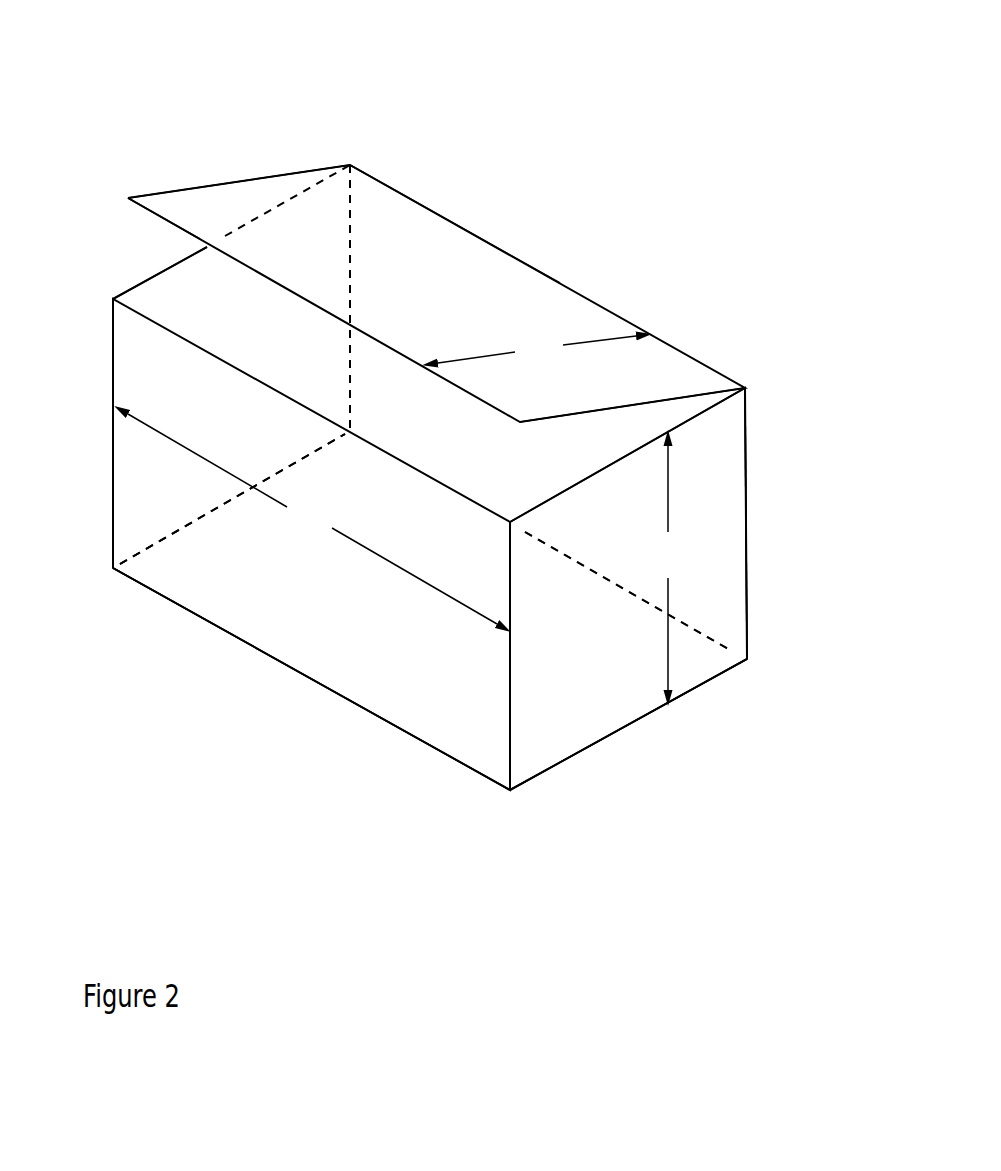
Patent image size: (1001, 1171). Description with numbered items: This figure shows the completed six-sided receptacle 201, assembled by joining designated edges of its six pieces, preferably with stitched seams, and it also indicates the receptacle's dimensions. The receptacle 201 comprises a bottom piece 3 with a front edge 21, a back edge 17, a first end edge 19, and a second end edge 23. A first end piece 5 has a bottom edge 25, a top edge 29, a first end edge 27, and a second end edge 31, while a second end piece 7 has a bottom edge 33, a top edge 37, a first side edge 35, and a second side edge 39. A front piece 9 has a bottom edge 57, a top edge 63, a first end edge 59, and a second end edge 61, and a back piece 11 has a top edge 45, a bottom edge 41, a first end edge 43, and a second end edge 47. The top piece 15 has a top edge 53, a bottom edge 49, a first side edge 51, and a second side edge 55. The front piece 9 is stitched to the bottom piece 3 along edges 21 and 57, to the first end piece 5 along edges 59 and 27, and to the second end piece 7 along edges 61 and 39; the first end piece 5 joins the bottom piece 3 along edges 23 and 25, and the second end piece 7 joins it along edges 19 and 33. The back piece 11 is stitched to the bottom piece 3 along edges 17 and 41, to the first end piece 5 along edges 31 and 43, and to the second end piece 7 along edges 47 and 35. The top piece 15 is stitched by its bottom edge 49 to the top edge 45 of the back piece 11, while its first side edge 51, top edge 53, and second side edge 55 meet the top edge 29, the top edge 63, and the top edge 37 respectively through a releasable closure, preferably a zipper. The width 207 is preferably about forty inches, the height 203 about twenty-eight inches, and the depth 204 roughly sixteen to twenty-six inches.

The receptacle 201 is at (660, 80).
The bottom piece 3 is at (463, 753).
The first end piece 5 is at (154, 384).
The second end piece 7 is at (725, 572).
The front piece 9 is at (210, 555).
The back piece 11 is at (733, 453).
The top piece 15 is at (550, 303).
The back edge of bottom piece 17 is at (580, 562).
The first end edge of bottom piece 19 is at (568, 757).
The front edge of bottom piece 21 is at (255, 647).
The second end edge of bottom piece 23 is at (228, 506).
The bottom edge of first end piece 25 is at (245, 493).
The first end edge of first end piece 27 is at (115, 344).
The top edge of first end piece 29 is at (160, 270).
The second end edge of first end piece 31 is at (324, 293).
The bottom edge of second end piece 33 is at (613, 737).
The first side edge of second end piece 35 is at (747, 533).
The top edge of second end piece 37 is at (642, 450).
The second side edge of second end piece 39 is at (510, 640).
The bottom edge of back piece 41 is at (585, 560).
The first end edge of back piece 43 is at (350, 270).
The top edge of back piece 45 is at (378, 183).
The second end edge of back piece 47 is at (748, 496).
The bottom edge of top piece 49 is at (522, 257).
The first side edge of top piece 51 is at (228, 182).
The top edge of top piece 53 is at (148, 210).
The second side edge of top piece 55 is at (668, 400).
The bottom edge of front piece 57 is at (290, 669).
The first end edge of front piece 59 is at (114, 489).
The second end edge of front piece 61 is at (510, 663).
The top edge of front piece 63 is at (363, 443).
The height 203 is at (665, 568).
The depth 204 is at (537, 349).
The width 207 is at (312, 519).